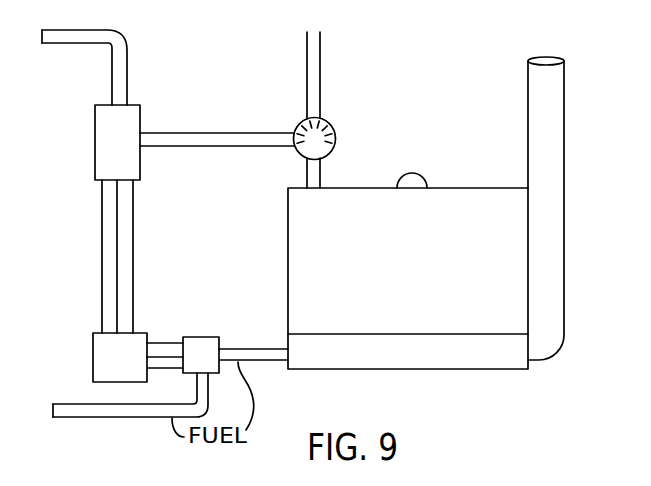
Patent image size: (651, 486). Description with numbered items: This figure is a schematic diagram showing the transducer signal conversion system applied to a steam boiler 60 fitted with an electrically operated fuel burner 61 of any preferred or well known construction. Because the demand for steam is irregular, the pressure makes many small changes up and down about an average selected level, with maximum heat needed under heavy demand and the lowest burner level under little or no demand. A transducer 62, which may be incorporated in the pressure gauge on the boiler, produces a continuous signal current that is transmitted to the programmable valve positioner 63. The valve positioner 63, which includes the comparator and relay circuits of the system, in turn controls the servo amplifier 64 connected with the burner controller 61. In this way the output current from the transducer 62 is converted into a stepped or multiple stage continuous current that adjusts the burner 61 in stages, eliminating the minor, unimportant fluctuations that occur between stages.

The steam boiler 60 is at (364, 207).
The fuel burner 61 is at (202, 337).
The transducer 62 is at (327, 122).
The programmable valve positioner 63 is at (141, 113).
The servo amplifier 64 is at (93, 352).